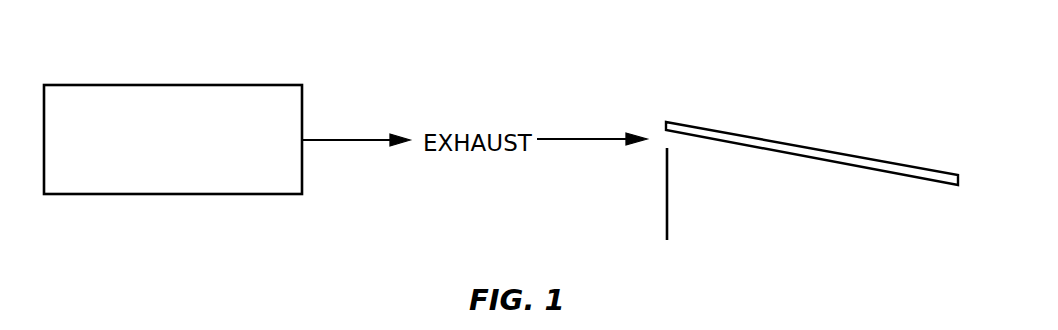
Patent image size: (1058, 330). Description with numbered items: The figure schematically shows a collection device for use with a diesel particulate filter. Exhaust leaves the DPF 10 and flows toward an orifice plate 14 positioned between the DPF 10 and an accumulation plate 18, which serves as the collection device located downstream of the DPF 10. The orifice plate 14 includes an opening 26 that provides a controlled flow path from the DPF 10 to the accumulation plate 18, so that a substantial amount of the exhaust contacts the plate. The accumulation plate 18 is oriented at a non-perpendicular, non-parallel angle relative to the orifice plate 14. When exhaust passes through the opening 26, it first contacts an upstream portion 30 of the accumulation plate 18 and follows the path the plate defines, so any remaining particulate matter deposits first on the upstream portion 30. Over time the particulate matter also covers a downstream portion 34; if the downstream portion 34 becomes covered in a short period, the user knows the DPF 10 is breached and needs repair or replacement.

The DPF 10 is at (159, 97).
The orifice plate 14 is at (665, 215).
The accumulation plate 18 is at (802, 147).
The opening 26 is at (665, 140).
The upstream portion 30 is at (695, 142).
The downstream portion 34 is at (883, 180).